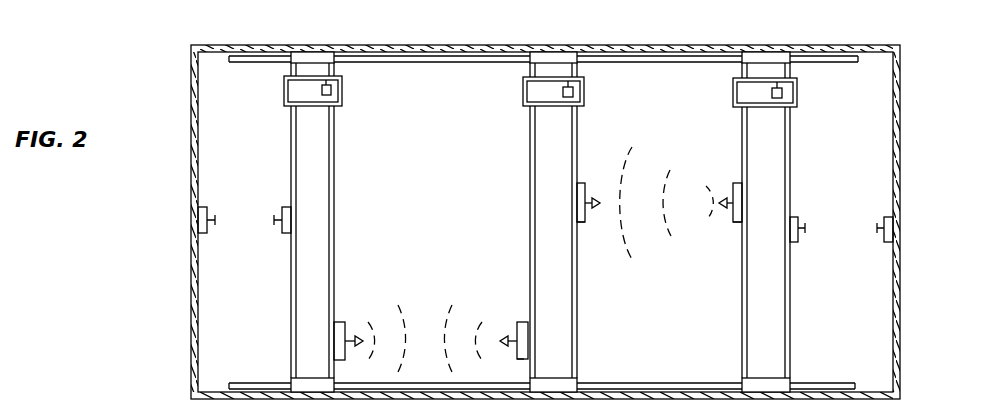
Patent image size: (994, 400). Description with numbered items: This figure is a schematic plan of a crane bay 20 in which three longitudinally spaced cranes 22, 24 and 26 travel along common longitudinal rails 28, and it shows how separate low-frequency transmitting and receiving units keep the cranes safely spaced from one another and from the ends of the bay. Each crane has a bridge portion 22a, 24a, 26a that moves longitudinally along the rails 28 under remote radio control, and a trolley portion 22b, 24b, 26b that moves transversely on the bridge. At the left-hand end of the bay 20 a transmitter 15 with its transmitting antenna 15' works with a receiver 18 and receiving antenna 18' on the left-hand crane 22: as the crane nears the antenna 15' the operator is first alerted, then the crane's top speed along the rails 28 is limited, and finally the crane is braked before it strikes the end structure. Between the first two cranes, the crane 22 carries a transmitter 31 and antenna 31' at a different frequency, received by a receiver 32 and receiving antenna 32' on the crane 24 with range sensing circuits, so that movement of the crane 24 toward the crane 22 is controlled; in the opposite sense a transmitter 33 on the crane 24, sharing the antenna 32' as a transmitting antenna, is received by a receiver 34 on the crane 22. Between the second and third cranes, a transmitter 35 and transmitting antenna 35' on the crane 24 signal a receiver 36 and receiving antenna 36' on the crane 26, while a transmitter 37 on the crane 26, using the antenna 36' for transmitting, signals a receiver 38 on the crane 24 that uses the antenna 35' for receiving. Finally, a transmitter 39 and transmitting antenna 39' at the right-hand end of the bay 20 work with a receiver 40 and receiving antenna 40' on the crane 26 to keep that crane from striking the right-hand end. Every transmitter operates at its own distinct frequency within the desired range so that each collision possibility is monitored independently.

The crane bay 20 is at (190, 42).
The crane 22 is at (336, 124).
The bridge portion 22a is at (318, 226).
The trolley portion 22b is at (284, 90).
The crane 24 is at (530, 215).
The bridge portion 24a is at (545, 160).
The trolley portion 24b is at (523, 91).
The crane 26 is at (742, 313).
The bridge portion 26a is at (766, 348).
The trolley portion 26b is at (797, 93).
The longitudinal rails 28 is at (667, 62).
The transmitter 15 is at (214, 198).
The transmitting antenna 15' is at (220, 240).
The receiver 18 is at (272, 198).
The receiving antenna 18' is at (264, 248).
The receiver 34 is at (340, 322).
The transmitter 31 is at (373, 356).
The transmitting antenna 31' is at (392, 326).
The receiver 32 is at (507, 314).
The receiving antenna 32' is at (480, 338).
The transmitter 33 is at (516, 356).
The receiver 38 is at (580, 183).
The transmitter 35 is at (595, 247).
The transmitting antenna 35' is at (622, 203).
The receiver 36 is at (722, 180).
The receiving antenna 36' is at (698, 203).
The transmitter 37 is at (738, 222).
The receiver 40 is at (809, 202).
The receiving antenna 40' is at (813, 249).
The transmitter 39 is at (874, 208).
The transmitting antenna 39' is at (864, 260).